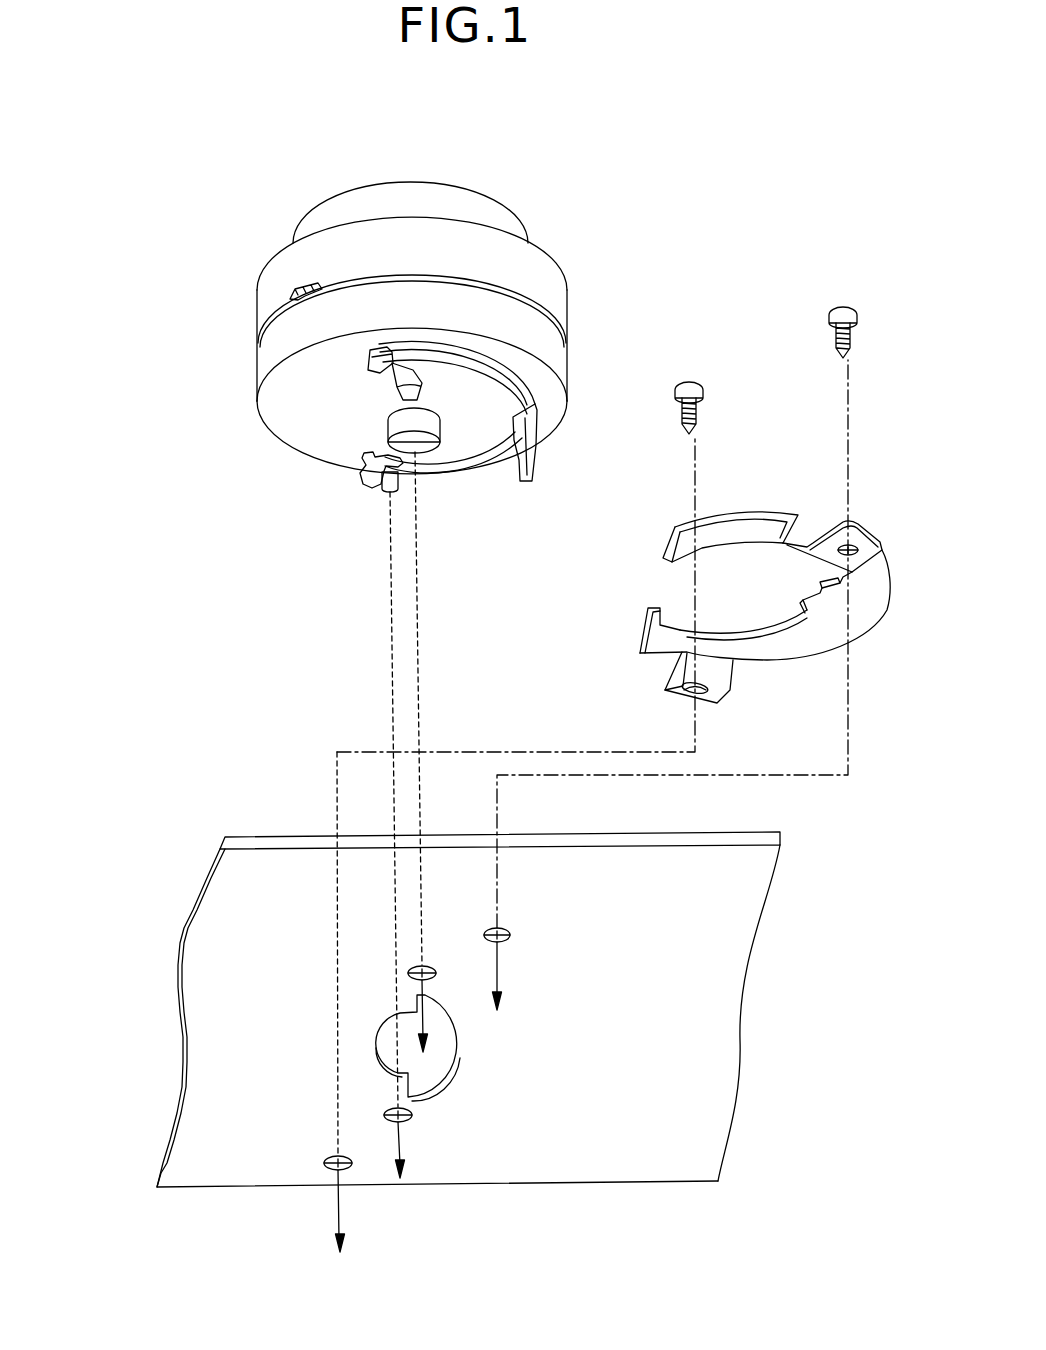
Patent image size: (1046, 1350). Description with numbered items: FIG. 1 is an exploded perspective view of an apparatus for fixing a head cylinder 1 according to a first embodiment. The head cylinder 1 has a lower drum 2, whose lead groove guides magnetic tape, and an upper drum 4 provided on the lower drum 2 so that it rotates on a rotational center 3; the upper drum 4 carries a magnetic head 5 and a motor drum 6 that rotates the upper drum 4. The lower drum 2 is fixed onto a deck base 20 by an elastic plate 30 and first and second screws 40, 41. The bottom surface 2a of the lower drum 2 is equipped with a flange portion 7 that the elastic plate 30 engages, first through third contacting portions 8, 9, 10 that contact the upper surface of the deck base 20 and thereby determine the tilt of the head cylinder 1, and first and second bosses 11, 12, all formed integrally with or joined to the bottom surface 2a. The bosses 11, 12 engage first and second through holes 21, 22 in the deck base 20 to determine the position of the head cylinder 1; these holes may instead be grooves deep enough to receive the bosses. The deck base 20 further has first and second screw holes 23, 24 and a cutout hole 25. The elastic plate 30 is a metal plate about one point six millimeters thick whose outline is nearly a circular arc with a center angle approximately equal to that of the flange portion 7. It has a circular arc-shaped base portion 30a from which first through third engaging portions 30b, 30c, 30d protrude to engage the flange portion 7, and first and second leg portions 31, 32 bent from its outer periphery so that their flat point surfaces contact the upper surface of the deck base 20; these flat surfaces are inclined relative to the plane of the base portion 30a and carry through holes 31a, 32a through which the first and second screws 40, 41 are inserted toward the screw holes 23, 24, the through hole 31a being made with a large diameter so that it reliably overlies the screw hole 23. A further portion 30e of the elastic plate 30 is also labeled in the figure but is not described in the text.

The head cylinder 1 is at (638, 175).
The lower drum 2 is at (543, 328).
The bottom surface 2a is at (303, 373).
The rotational center 3 is at (413, 449).
The upper drum 4 is at (540, 268).
The magnetic head 5 is at (291, 296).
The motor drum 6 is at (493, 203).
The flange portion 7 is at (380, 343).
The first contacting portion 8 is at (362, 479).
The second contacting portion 9 is at (392, 372).
The third contacting portion 10 is at (524, 483).
The first boss 11 is at (388, 492).
The second boss 12 is at (405, 399).
The deck base 20 is at (433, 1184).
The first through hole 21 is at (411, 1117).
The second through hole 22 is at (433, 977).
The first screw hole 23 is at (324, 1163).
The second screw hole 24 is at (511, 936).
The cutout hole 25 is at (455, 1072).
The elastic plate 30 is at (631, 654).
The base portion 30a is at (733, 513).
The first engaging portion 30b is at (672, 633).
The second engaging portion 30c is at (702, 548).
The third engaging portion 30d is at (820, 612).
The tab 30e is at (646, 620).
The first leg portion 31 is at (731, 689).
The through hole 31a is at (698, 692).
The second leg portion 32 is at (866, 530).
The through hole 32a is at (843, 545).
The first screw 40 is at (702, 397).
The second screw 41 is at (830, 318).